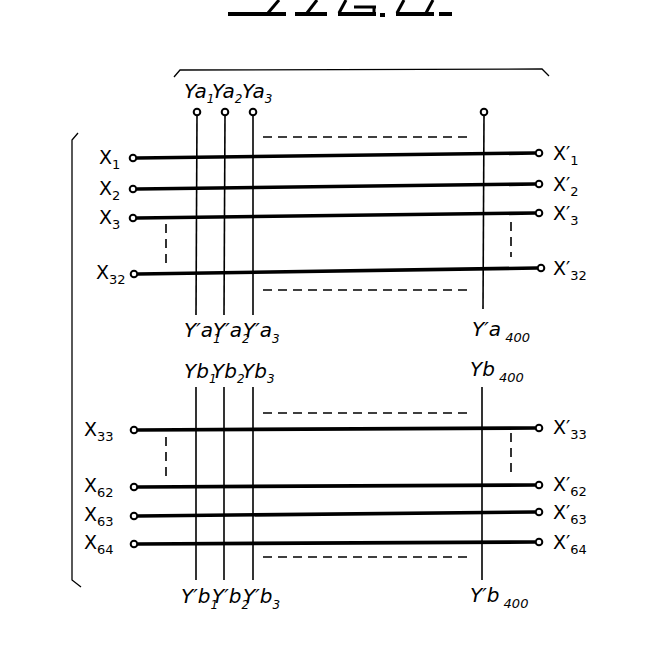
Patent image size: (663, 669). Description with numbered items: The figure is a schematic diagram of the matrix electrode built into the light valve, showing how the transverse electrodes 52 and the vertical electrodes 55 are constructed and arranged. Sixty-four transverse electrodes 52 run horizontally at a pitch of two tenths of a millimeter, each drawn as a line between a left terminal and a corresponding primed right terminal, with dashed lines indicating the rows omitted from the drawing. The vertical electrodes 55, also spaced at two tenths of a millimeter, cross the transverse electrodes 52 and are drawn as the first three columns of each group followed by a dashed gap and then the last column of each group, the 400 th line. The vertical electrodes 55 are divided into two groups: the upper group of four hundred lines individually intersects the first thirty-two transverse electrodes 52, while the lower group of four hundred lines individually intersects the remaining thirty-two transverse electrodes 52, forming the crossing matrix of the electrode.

The transverse electrodes 52 is at (72, 366).
The vertical electrodes 55 is at (355, 68).
The 400th Y conductor (Ya400) 400 is at (501, 194).